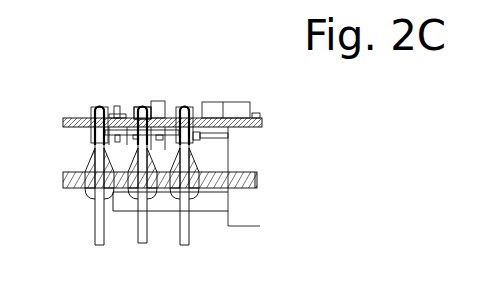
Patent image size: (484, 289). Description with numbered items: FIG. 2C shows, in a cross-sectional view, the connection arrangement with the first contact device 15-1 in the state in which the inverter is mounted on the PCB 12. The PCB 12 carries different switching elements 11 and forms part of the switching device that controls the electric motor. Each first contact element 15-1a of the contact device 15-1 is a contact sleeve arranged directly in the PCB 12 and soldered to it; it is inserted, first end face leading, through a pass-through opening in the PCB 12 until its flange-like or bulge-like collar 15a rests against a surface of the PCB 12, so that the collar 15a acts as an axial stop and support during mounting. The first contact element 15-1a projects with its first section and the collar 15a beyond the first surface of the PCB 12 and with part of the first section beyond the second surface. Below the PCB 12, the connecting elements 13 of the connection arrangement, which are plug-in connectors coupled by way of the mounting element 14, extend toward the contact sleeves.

The switching elements 11 is at (233, 107).
The PCB 12 is at (73, 125).
The connecting elements 13 is at (182, 244).
The mounting element 14 is at (233, 181).
The collar 15a is at (92, 119).
The first contact device 15-1 is at (174, 75).
The first contact element 15-1a is at (182, 106).